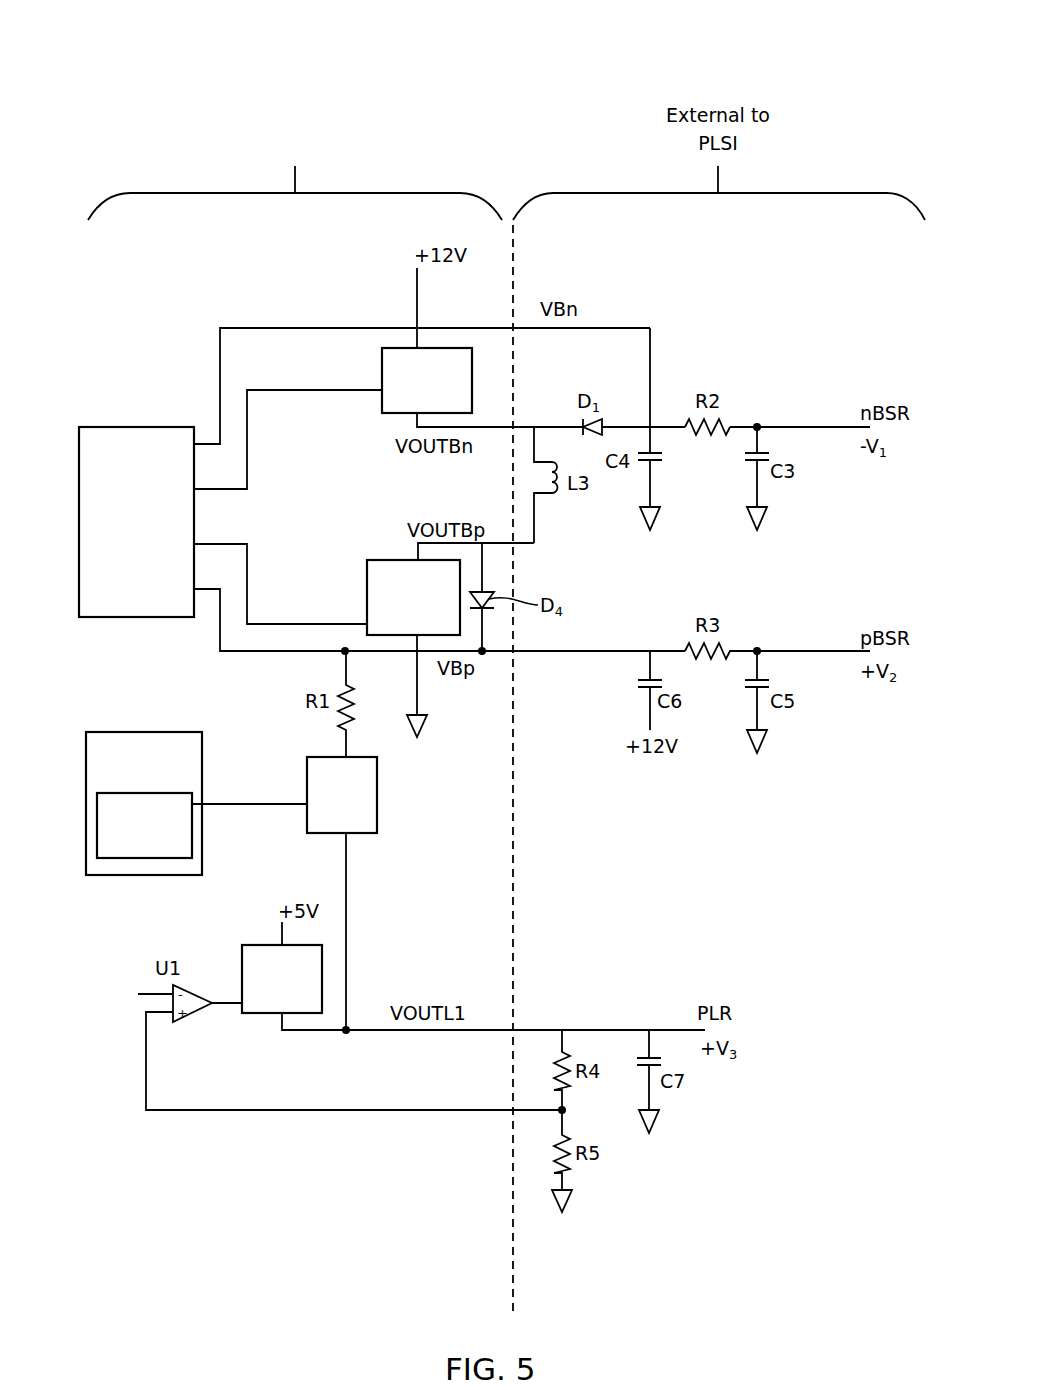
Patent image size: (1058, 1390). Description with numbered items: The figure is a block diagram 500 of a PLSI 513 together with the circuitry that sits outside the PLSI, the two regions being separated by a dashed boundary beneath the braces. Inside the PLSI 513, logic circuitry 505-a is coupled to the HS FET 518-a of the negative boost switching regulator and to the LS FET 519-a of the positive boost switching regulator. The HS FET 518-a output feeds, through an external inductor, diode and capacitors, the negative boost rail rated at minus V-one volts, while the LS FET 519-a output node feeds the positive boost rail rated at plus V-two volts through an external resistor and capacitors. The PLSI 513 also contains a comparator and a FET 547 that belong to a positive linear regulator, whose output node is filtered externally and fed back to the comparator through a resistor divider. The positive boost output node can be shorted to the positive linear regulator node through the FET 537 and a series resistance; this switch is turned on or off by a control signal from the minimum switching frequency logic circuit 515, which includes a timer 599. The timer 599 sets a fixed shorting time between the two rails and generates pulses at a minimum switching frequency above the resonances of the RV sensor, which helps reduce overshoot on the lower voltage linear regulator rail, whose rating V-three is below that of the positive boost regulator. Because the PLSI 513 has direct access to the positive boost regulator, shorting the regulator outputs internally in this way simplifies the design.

The block diagram 500 is at (822, 58).
The PLSI 513 is at (343, 139).
The logic circuitry 505-a is at (108, 555).
The HS FET 518-a is at (389, 348).
The LS FET 519-a is at (384, 560).
The minimum switching frequency logic circuit 515 is at (126, 766).
The timer 599 is at (127, 852).
The FET 537 is at (324, 819).
The FET 547 is at (264, 1004).